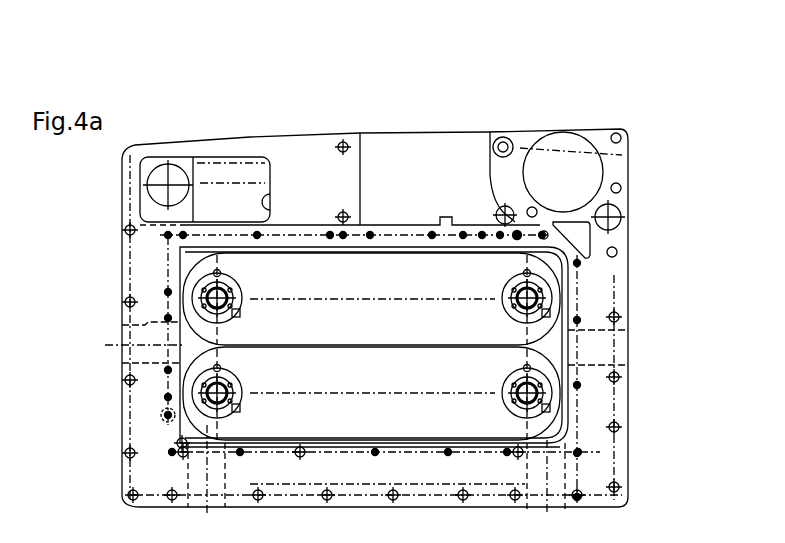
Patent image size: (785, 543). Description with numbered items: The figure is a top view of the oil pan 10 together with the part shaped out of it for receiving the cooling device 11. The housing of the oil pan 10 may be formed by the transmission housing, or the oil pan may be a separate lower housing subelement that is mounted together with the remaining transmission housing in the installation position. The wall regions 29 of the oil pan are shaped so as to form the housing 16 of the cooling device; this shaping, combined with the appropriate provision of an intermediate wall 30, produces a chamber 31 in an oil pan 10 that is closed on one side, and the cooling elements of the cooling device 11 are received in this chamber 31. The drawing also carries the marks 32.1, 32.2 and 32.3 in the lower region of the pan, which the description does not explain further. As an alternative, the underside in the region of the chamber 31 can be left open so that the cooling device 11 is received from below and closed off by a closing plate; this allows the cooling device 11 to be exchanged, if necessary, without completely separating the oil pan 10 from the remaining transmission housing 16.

The oil pan 10 is at (443, 170).
The cooling device 11 is at (496, 422).
The housing 16 is at (623, 152).
The wall regions 29 is at (604, 442).
The intermediate wall 30 is at (415, 238).
The chamber 31 is at (560, 345).
The fastening bolt 32.1 is at (404, 515).
The fastening bolt 32.2 is at (460, 515).
The fastening bolt 32.3 is at (529, 491).